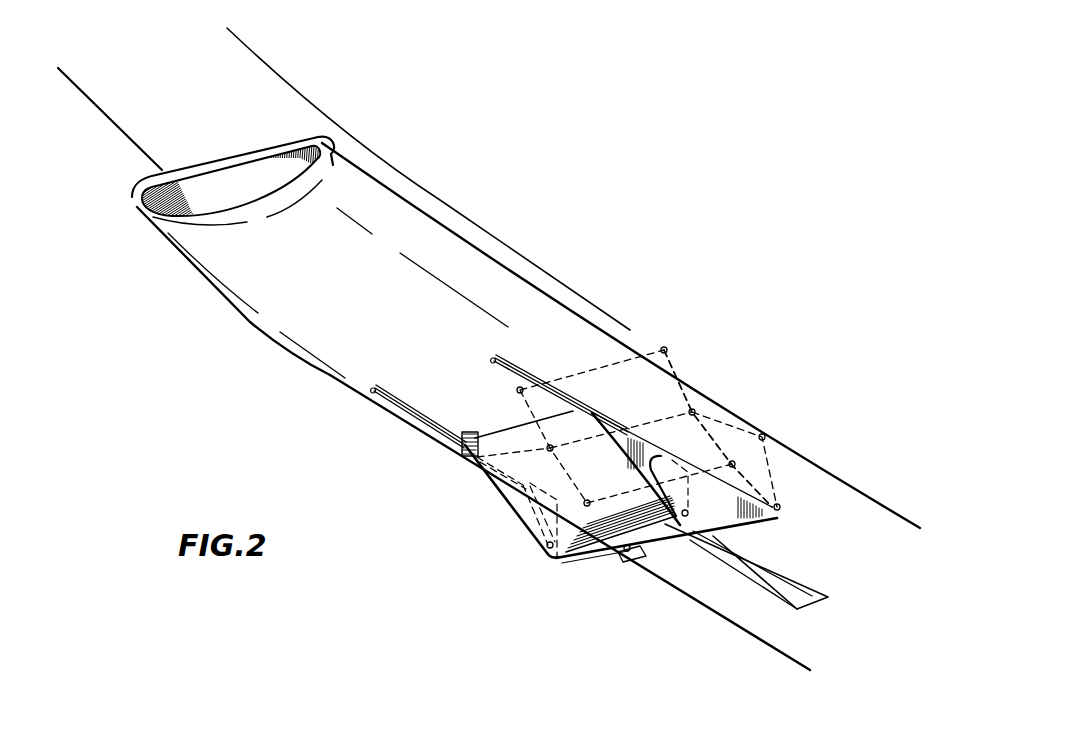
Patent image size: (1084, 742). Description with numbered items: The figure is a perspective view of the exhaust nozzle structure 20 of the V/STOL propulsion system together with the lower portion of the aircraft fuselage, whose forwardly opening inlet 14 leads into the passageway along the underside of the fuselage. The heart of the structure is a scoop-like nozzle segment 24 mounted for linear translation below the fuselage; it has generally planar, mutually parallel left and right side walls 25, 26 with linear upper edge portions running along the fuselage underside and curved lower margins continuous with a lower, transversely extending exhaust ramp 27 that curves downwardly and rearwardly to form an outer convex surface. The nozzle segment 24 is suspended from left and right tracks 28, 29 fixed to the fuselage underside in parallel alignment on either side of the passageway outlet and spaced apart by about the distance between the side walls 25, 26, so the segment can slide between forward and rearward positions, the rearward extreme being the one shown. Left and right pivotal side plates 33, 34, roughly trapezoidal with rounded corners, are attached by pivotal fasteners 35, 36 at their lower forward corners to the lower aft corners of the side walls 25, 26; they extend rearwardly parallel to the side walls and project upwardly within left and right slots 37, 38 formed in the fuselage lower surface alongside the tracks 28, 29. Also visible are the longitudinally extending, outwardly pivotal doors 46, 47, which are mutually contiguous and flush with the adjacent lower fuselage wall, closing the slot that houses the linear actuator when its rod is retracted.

The inlet 14 is at (213, 186).
The exhaust nozzle structure 20 is at (471, 557).
The nozzle segment 24 is at (500, 521).
The left side wall 25 is at (495, 487).
The right side wall 26 is at (620, 448).
The exhaust ramp 27 is at (602, 558).
The left track 28 is at (388, 388).
The right track 29 is at (500, 358).
The left pivotal side plate 33 is at (586, 558).
The right pivotal side plate 34 is at (732, 498).
The pivotal fastener 35 is at (538, 552).
The pivotal fastener 36 is at (689, 515).
The left slot 37 is at (635, 567).
The right slot 38 is at (625, 430).
The pivotal door 46 is at (772, 603).
The pivotal door 47 is at (812, 590).